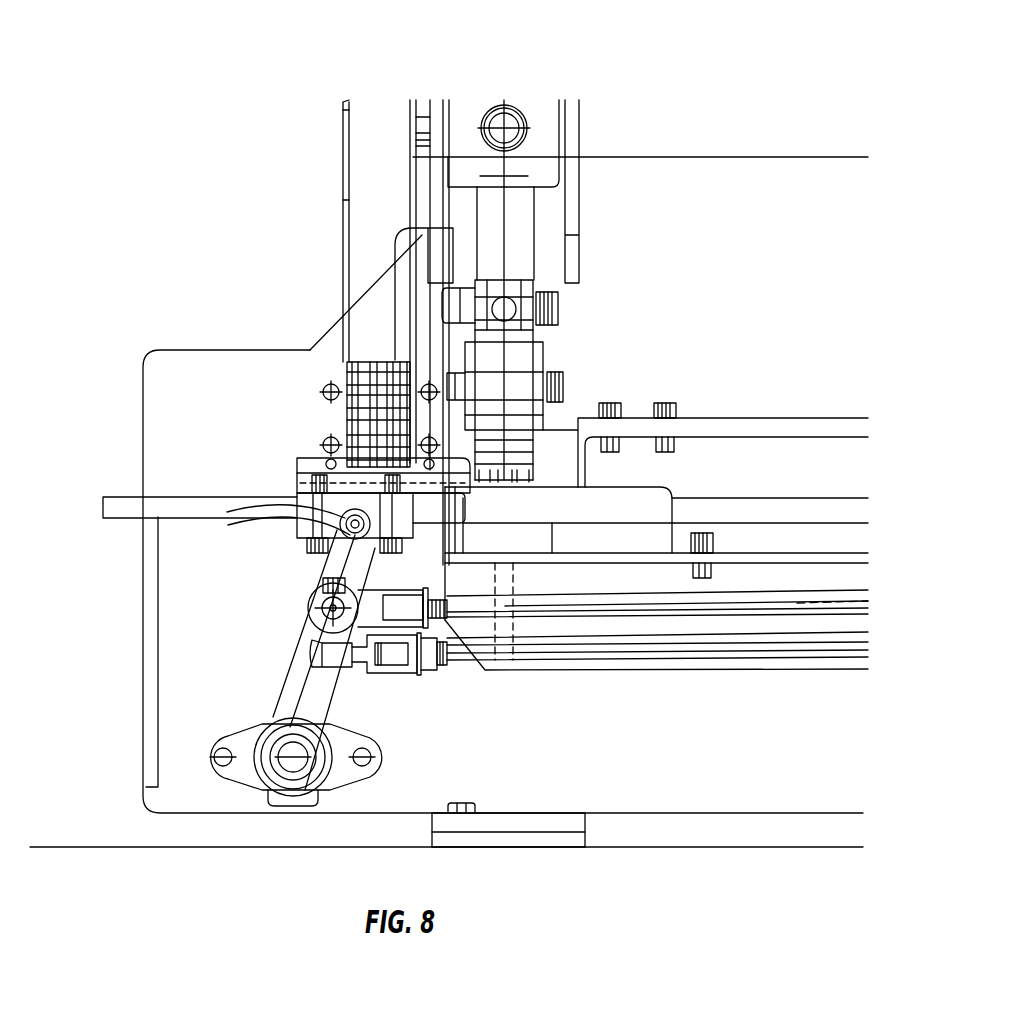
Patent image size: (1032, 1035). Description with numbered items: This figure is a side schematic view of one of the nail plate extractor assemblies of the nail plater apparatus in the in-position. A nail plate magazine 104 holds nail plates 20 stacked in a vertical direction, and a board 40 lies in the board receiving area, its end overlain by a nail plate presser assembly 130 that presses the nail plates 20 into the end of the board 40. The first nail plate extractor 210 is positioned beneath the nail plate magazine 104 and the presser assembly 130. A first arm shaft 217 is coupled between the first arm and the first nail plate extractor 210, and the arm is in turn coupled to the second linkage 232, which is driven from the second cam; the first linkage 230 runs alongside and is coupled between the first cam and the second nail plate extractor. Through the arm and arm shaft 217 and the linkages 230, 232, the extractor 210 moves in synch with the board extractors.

The nail plate 20 is at (362, 357).
The board 40 is at (808, 506).
The nail plate magazine 104 is at (367, 186).
The nail plate presser assembly 130 is at (522, 88).
The first nail plate extractor 210 is at (297, 477).
The first arm shaft 217 is at (288, 657).
The first linkage 230 is at (456, 662).
The second linkage 232 is at (557, 613).